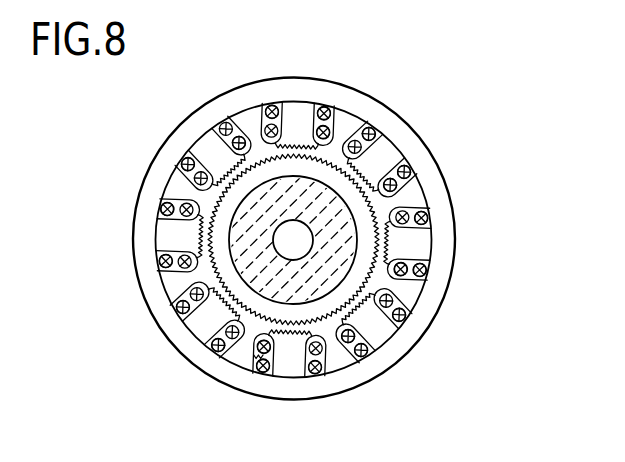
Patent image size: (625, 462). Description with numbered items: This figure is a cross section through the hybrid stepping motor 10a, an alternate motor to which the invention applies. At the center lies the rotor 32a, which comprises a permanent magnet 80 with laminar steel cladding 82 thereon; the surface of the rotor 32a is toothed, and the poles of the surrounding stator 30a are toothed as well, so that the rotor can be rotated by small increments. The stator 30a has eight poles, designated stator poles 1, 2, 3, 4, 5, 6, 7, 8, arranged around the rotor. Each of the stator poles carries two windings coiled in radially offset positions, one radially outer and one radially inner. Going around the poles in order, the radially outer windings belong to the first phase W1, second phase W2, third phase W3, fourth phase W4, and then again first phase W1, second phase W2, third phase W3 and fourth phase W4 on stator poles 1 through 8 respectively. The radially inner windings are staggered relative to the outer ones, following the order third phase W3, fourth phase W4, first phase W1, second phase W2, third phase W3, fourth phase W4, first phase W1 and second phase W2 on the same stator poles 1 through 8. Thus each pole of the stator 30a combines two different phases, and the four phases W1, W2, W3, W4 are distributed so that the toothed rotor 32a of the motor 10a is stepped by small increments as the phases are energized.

The hybrid stepping motor 10a is at (445, 145).
The stator 30a is at (253, 70).
The permanent magnet 80 is at (240, 212).
The laminar steel cladding 82 is at (260, 327).
The rotor 32a is at (205, 275).
The stator pole 1 is at (298, 125).
The stator pole 2 is at (377, 162).
The stator pole 3 is at (407, 244).
The stator pole 4 is at (371, 323).
The stator pole 5 is at (290, 353).
The stator pole 6 is at (210, 317).
The stator pole 7 is at (179, 236).
The stator pole 8 is at (216, 156).
The first phase winding W1 is at (160, 203).
The second phase winding W2 is at (236, 136).
The third phase winding W3 is at (325, 125).
The fourth phase winding W4 is at (185, 157).